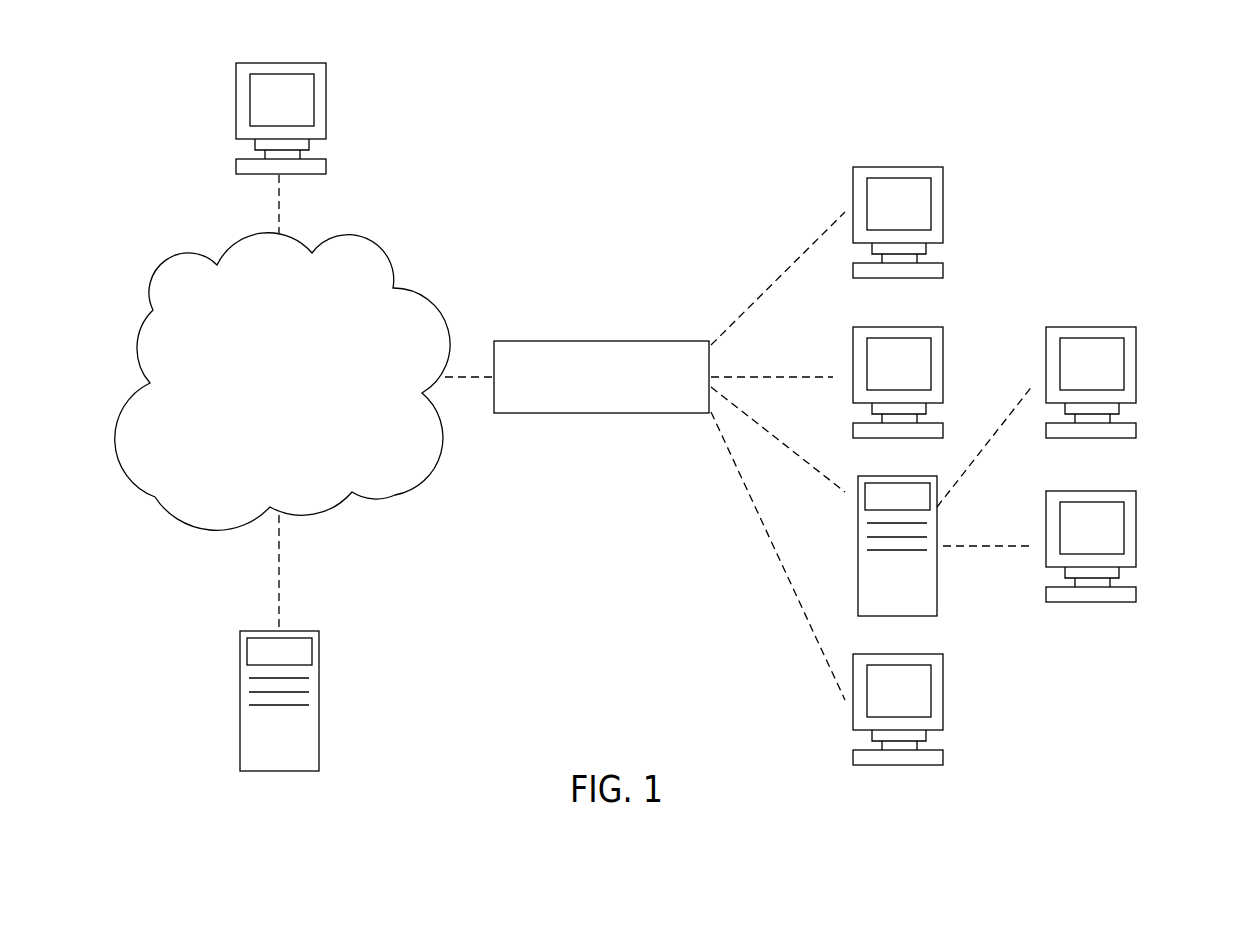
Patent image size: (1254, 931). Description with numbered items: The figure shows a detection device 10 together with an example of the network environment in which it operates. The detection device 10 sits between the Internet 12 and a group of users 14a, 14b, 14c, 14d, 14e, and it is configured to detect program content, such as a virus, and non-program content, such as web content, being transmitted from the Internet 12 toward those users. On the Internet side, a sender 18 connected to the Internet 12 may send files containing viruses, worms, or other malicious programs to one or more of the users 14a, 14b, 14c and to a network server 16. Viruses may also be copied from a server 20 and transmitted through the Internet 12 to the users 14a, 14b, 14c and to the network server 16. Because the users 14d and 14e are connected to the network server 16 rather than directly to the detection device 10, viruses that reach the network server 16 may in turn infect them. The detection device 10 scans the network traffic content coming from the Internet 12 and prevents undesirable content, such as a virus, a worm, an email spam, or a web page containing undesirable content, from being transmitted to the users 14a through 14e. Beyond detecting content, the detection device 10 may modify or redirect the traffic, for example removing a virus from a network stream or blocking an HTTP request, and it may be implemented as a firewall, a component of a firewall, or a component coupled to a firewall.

The detection device 10 is at (597, 340).
The Internet 12 is at (398, 493).
The user 14a is at (943, 220).
The user 14b is at (943, 365).
The user 14c is at (943, 695).
The user 14d is at (1136, 365).
The user 14e is at (1136, 530).
The network server 16 is at (937, 592).
The sender 18 is at (325, 103).
The server 20 is at (319, 700).